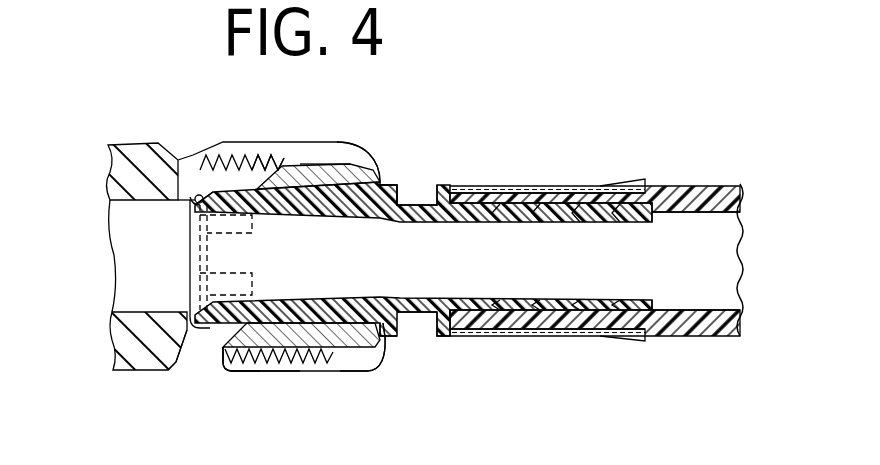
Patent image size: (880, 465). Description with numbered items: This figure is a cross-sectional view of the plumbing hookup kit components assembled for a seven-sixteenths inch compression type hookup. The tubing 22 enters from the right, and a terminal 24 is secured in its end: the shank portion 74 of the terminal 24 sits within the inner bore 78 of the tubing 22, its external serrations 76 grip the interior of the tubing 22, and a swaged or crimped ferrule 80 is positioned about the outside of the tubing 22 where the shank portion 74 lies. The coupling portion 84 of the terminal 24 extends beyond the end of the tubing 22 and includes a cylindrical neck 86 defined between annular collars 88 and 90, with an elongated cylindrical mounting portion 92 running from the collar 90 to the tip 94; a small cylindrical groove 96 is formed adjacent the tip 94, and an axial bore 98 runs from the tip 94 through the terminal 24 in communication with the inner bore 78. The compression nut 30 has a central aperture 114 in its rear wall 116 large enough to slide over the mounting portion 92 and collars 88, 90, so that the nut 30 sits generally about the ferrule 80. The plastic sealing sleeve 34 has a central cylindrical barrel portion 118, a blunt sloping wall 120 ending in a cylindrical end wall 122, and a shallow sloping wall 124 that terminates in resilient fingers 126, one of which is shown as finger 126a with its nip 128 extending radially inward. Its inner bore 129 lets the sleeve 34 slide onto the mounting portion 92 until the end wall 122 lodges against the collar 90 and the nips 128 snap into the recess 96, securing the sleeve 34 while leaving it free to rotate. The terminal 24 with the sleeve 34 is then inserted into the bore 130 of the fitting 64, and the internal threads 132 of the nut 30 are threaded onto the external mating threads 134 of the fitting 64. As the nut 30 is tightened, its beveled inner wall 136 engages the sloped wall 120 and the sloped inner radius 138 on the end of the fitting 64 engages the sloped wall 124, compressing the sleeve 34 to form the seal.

The tubing 22 is at (718, 192).
The terminal 24 is at (438, 168).
The compression nut 30 is at (237, 362).
The plastic sealing sleeve 34 is at (293, 152).
The fitting 64 is at (181, 150).
The shank portion 74 is at (656, 200).
The external serrations 76 is at (573, 188).
The inner bore 78 is at (742, 228).
The ferrule 80 is at (603, 186).
The coupling portion 84 is at (426, 157).
The cylindrical recess or neck 86 is at (412, 322).
The annular collar 88 is at (440, 337).
The annular collar 90 is at (388, 335).
The elongated cylindrical mounting portion 92 is at (380, 325).
The tip 94 is at (188, 206).
The cylindrical groove or recess 96 is at (200, 186).
The axial passageway or bore 98 is at (652, 222).
The central aperture 114 is at (386, 185).
The rear wall 116 is at (377, 185).
The central cylindrical barrel portion 118 is at (310, 165).
The sloping wall 120 is at (341, 170).
The cylindrical end wall 122 is at (370, 175).
The sloping wall 124 is at (272, 165).
The resilient fingers 126 is at (186, 263).
The resilient finger 126a is at (299, 169).
The nip 128 is at (188, 150).
The inner bore 129 is at (285, 350).
The bore 130 is at (194, 198).
The internal threads 132 is at (243, 363).
The external mating threads 134 is at (207, 362).
The beveled or sloped inner wall 136 is at (357, 340).
The sloped inner radius 138 is at (270, 360).